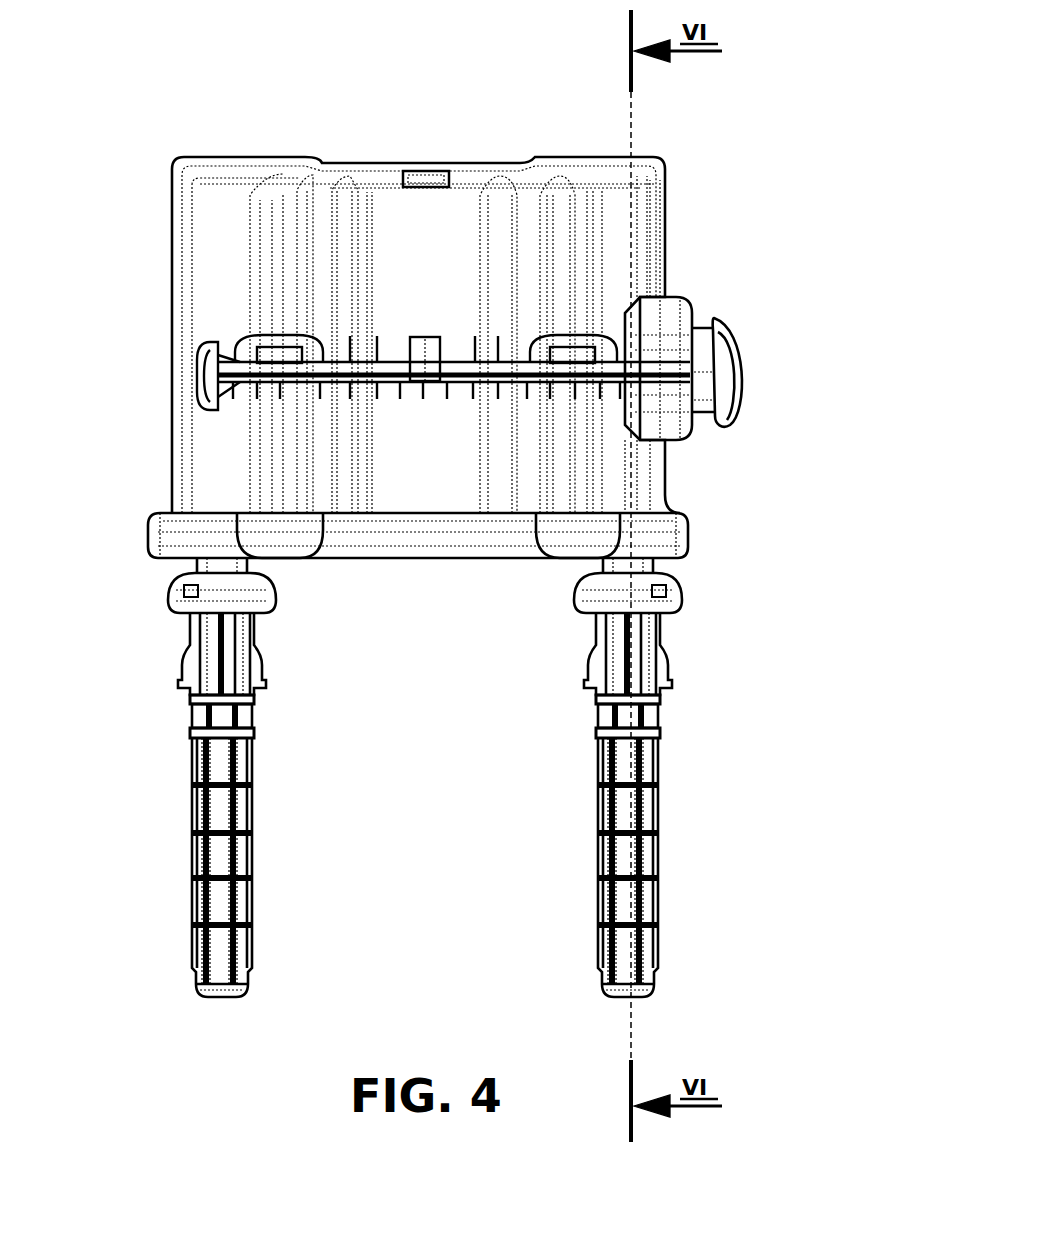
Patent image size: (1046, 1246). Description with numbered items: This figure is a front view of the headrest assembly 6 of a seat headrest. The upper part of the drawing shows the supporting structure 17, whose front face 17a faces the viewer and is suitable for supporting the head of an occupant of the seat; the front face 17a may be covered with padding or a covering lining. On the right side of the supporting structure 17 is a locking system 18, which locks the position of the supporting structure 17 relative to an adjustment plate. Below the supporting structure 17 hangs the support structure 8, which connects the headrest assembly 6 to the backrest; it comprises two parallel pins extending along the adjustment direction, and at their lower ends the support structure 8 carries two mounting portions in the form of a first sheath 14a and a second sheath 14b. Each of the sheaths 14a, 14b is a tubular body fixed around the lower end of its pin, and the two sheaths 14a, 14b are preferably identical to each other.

The headrest assembly 6 is at (745, 104).
The support structure 8 is at (145, 806).
The first sheath 14a is at (217, 851).
The second sheath 14b is at (636, 848).
The supporting structure 17 is at (215, 235).
The front face 17a is at (394, 215).
The locking system 18 is at (768, 328).